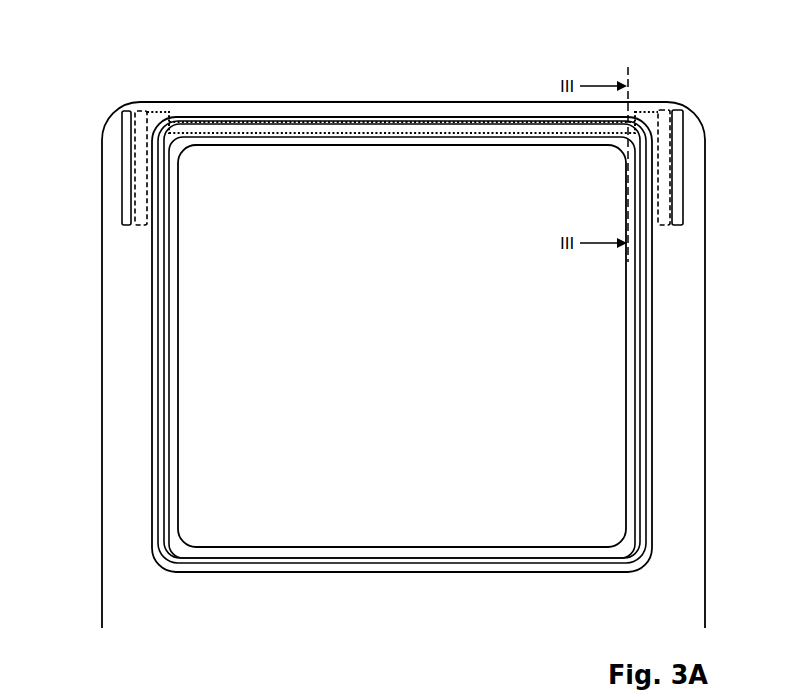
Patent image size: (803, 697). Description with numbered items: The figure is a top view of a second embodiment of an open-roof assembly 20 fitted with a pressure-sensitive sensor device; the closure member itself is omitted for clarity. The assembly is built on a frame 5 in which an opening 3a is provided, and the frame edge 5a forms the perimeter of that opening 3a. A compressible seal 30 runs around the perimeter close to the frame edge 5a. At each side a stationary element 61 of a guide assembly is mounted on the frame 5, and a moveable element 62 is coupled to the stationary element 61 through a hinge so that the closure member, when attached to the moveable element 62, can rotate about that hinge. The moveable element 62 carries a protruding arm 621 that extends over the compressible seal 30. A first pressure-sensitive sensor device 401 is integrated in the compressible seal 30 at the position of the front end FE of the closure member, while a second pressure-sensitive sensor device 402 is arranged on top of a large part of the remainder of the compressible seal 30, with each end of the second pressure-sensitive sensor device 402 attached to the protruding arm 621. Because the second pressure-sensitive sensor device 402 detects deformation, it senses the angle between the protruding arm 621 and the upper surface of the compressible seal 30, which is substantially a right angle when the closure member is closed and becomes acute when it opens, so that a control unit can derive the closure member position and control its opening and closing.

The open-roof assembly 20 is at (487, 95).
The frame 5 is at (202, 110).
The frame edge 5a is at (214, 140).
The compressible seal 30 is at (304, 140).
The opening 3a is at (409, 330).
The front end FE is at (402, 119).
The first pressure-sensitive sensor device 401 is at (381, 125).
The second pressure-sensitive sensor device 402 is at (642, 301).
The stationary element 61 is at (128, 174).
The moveable element 62 is at (143, 213).
The protruding arm 621 is at (643, 118).